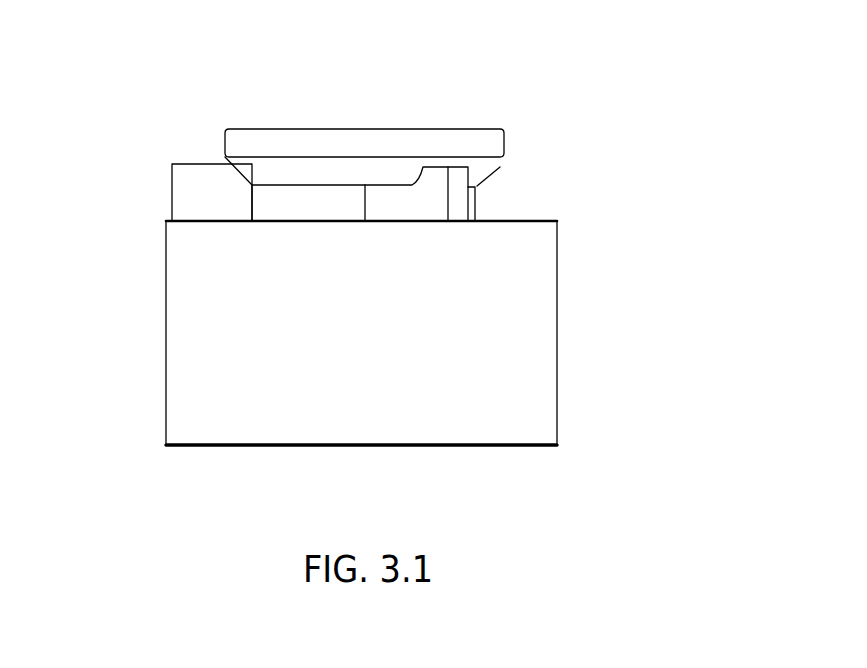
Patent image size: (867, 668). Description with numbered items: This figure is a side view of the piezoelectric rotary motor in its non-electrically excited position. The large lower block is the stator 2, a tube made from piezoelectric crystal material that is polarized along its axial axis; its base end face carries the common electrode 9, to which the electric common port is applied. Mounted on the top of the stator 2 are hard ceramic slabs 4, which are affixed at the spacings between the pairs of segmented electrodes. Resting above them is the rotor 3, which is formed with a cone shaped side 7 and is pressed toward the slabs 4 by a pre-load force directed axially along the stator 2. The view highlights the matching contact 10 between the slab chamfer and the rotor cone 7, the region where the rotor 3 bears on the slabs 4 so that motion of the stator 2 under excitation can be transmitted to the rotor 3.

The stator 2 is at (538, 351).
The rotor 3 is at (287, 135).
The slab 4 is at (197, 198).
The cone shaped side 7 is at (500, 167).
The base end face common electrode 9 is at (184, 460).
The matching contact 10 is at (230, 167).